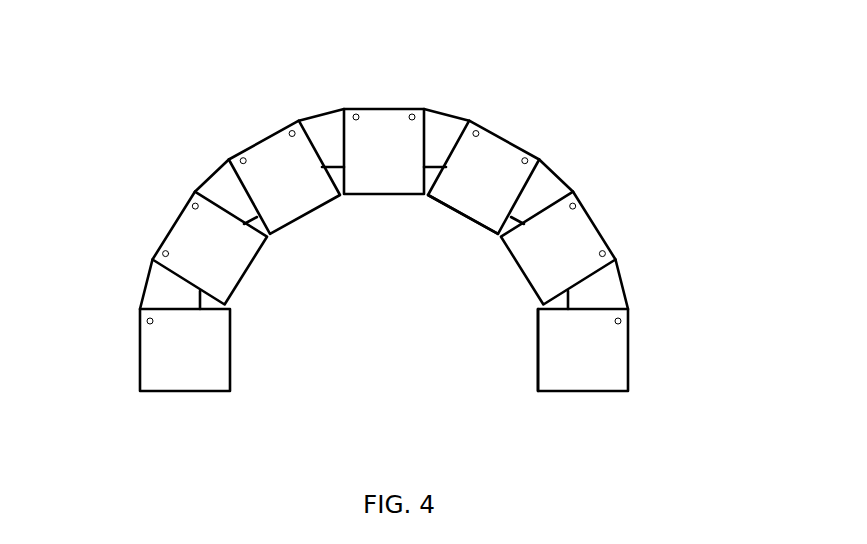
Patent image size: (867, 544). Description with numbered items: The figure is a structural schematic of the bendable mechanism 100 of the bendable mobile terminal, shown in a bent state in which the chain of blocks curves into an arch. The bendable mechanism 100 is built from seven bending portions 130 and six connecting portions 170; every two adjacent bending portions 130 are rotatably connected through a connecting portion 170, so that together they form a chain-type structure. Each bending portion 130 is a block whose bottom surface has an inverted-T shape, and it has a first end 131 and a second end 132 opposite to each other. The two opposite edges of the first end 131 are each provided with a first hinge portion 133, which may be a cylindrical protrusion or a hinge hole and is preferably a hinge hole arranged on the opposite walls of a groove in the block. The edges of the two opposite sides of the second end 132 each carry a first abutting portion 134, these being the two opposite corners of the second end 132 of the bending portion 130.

The bendable mechanism 100 is at (385, 92).
The bending portion 130 is at (608, 358).
The first end 131 is at (490, 143).
The second end 132 is at (487, 195).
The first hinge portion 133 is at (153, 260).
The first abutting portion 134 is at (537, 330).
The connecting portion 170 is at (618, 293).